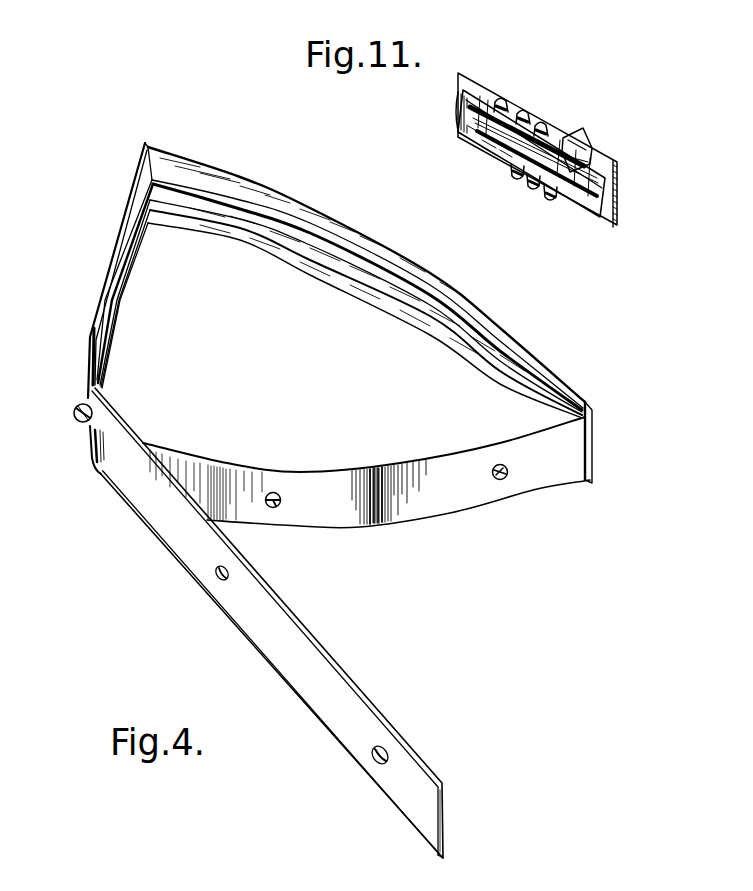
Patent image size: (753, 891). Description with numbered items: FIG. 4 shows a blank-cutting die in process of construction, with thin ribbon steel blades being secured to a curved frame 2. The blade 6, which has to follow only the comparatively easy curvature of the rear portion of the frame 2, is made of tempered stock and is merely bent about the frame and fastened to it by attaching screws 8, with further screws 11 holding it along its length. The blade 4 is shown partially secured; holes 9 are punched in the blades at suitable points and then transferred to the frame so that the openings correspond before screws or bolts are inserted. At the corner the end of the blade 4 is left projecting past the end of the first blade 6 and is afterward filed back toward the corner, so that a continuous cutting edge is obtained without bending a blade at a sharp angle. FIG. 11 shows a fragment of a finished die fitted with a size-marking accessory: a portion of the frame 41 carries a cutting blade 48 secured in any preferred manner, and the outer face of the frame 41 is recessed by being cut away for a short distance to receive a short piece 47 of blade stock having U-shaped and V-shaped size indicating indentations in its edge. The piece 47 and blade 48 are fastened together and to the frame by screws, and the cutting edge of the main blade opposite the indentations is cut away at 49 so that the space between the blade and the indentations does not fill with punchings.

In FIG. 4, the groove track in the curved rail 2 is at (398, 295).
In FIG. 4, the blade 4 is at (172, 520).
In FIG. 4, the blade 6 is at (340, 335).
In FIG. 4, the attaching screws 8 is at (76, 410).
In FIG. 4, the hole in arm 9 is at (219, 580).
In FIG. 4, the fastening screws 11 is at (495, 478).
In FIG. 11, the frame 41 is at (503, 102).
In FIG. 11, the short piece 47 is at (580, 148).
In FIG. 11, the cutting blade 48 is at (596, 152).
In FIG. 11, the cut away portion 49 is at (513, 108).